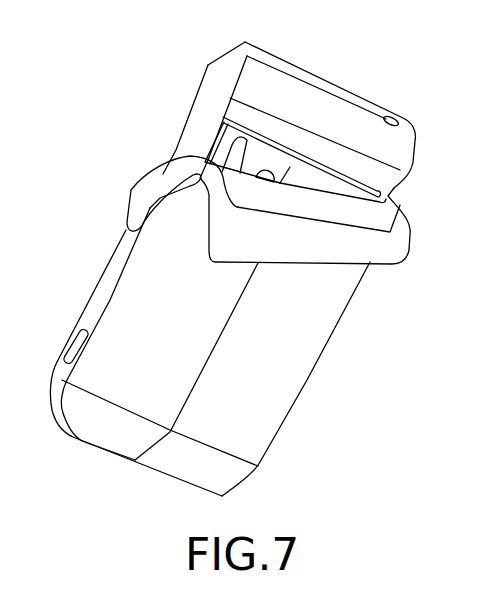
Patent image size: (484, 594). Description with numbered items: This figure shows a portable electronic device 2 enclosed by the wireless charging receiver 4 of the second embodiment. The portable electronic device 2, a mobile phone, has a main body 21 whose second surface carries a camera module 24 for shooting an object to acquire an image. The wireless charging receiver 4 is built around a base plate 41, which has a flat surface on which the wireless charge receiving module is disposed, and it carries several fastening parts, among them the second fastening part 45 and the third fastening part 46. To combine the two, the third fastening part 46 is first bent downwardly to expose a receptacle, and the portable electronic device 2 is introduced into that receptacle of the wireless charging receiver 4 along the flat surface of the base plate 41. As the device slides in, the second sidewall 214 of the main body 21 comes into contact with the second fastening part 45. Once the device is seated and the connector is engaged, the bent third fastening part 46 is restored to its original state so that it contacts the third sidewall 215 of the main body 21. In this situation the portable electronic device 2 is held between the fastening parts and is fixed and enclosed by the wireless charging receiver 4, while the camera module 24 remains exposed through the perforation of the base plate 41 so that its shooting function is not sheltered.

The portable electronic device 2 is at (272, 114).
The main body 21 is at (400, 118).
The camera module 24 is at (258, 172).
The second sidewall 214 is at (173, 152).
The third sidewall 215 is at (300, 77).
The wireless charging receiver 4 is at (226, 326).
The base plate 41 is at (123, 337).
The second fastening part 45 is at (61, 311).
The third fastening part 46 is at (377, 247).